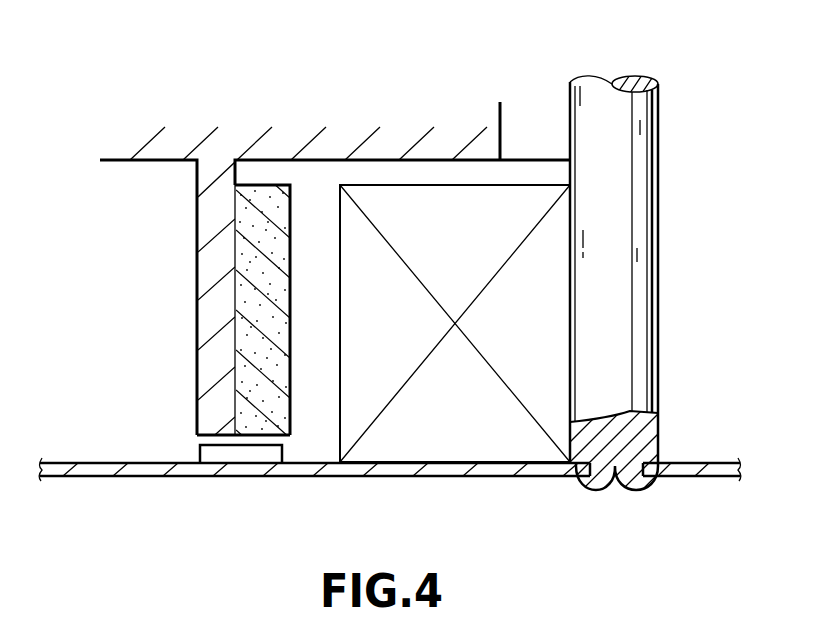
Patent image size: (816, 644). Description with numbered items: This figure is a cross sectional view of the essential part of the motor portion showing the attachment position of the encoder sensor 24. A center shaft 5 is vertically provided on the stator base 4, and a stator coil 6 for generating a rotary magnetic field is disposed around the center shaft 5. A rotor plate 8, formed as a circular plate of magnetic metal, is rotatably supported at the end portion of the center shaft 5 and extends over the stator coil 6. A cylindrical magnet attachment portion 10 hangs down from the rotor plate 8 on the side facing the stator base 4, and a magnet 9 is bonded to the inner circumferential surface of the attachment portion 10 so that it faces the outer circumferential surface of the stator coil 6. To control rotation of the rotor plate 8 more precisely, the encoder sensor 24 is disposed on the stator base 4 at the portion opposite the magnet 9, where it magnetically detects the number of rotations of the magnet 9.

The stator base 4 is at (368, 478).
The center shaft 5 is at (640, 295).
The stator coil 6 is at (478, 457).
The rotor plate 8 is at (122, 163).
The magnet 9 is at (270, 193).
The magnet attachment portion 10 is at (208, 227).
The encoder sensor 24 is at (242, 457).